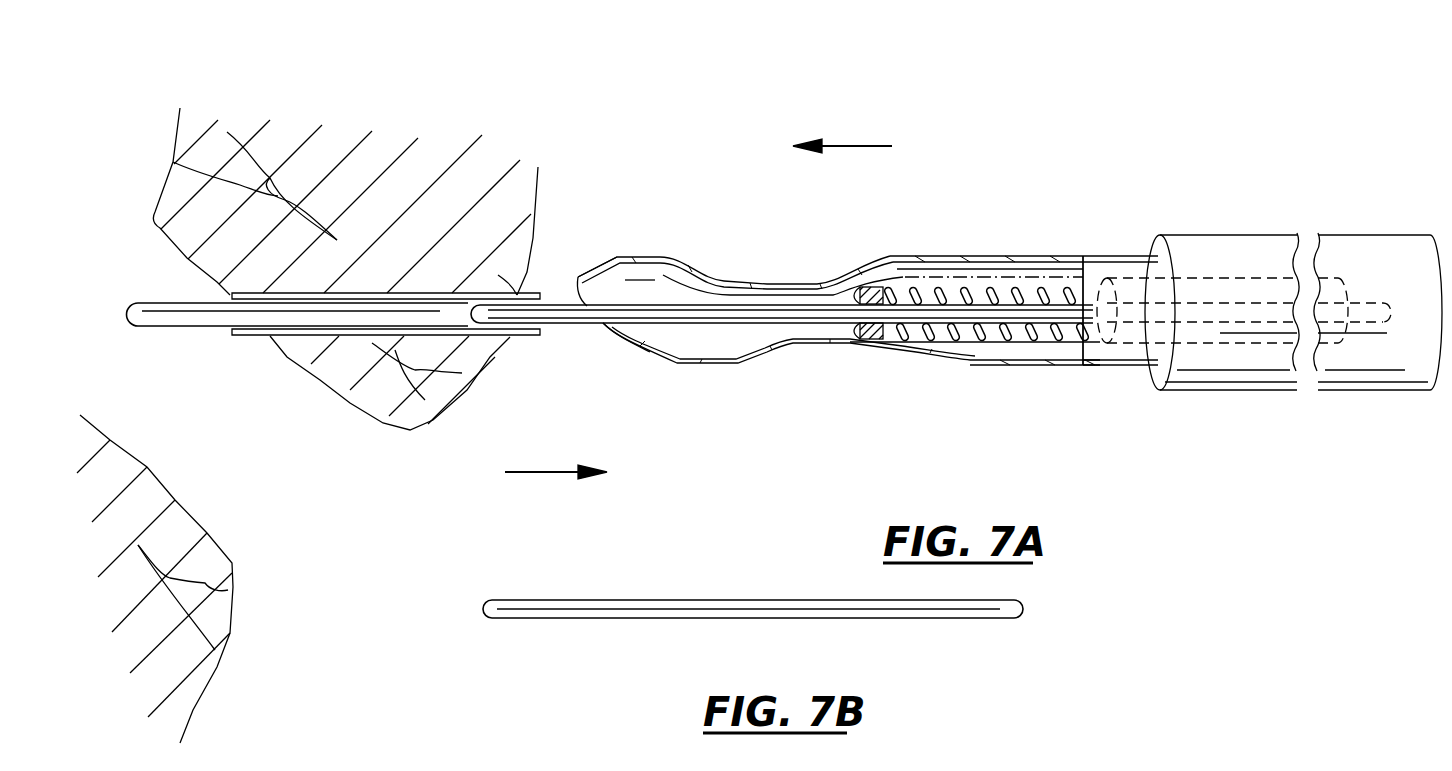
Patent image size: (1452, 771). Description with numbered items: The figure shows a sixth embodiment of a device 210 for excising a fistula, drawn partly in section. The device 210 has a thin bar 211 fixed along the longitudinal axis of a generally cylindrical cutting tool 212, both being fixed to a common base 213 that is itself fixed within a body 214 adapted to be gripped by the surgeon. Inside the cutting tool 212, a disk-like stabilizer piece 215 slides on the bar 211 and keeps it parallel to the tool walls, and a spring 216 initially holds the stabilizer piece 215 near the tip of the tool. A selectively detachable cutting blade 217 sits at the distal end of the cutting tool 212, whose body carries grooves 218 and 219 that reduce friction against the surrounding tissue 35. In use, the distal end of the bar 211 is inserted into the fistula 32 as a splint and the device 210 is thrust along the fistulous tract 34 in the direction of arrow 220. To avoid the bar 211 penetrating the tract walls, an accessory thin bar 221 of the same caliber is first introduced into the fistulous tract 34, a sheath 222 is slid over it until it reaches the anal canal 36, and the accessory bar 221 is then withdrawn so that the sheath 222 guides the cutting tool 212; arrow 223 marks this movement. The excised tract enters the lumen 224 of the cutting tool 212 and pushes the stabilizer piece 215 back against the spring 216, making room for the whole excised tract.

In FIG. 7A, the device 210 is at (1025, 120).
In FIG. 7A, the thin bar 211 is at (788, 310).
In FIG. 7A, the cutting tool 212 is at (1066, 244).
In FIG. 7A, the common base 213 is at (1238, 288).
In FIG. 7A, the body 214 is at (1283, 242).
In FIG. 7A, the disk-like stabilizer piece 215 is at (870, 339).
In FIG. 7A, the spring 216 is at (1033, 340).
In FIG. 7A, the cutting blade 217 is at (578, 265).
In FIG. 7A, the groove 218 is at (797, 347).
In FIG. 7A, the groove 219 is at (720, 275).
In FIG. 7A, the arrow 220 is at (853, 143).
In FIG. 7B, the accessory thin bar 221 is at (747, 613).
In FIG. 7A, the sheath 222 is at (172, 300).
In FIG. 7A, the direction of rod advancement 223 is at (547, 474).
In FIG. 7A, the lumen 224 is at (617, 341).
In FIG. 7A, the fistula 32 is at (511, 341).
In FIG. 7A, the fistulous tract 34 is at (490, 293).
In FIG. 7A, the surrounding tissue 35 is at (407, 207).
In FIG. 7A, the anal canal 36 is at (228, 423).